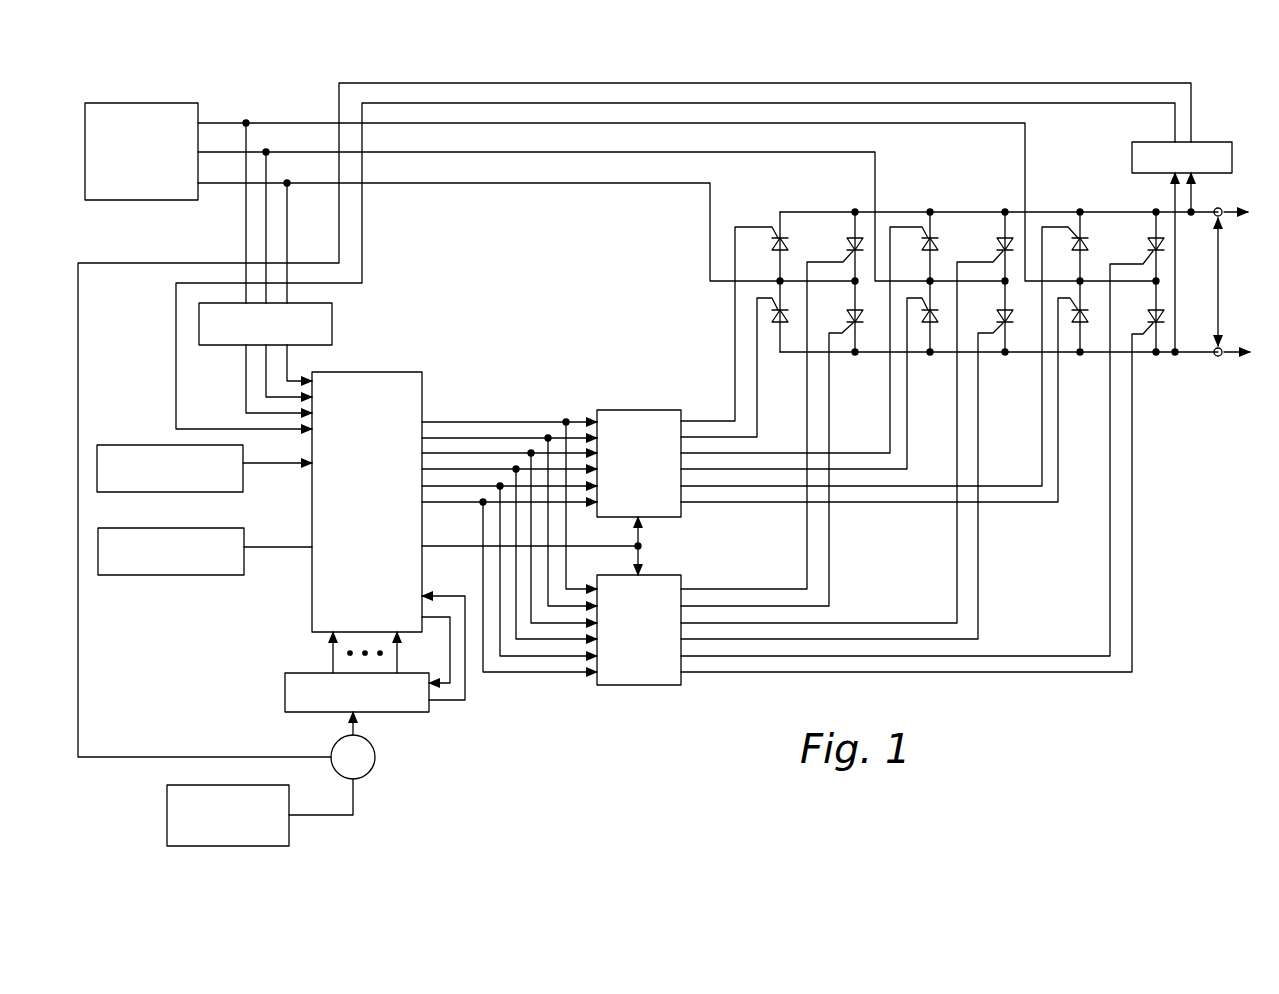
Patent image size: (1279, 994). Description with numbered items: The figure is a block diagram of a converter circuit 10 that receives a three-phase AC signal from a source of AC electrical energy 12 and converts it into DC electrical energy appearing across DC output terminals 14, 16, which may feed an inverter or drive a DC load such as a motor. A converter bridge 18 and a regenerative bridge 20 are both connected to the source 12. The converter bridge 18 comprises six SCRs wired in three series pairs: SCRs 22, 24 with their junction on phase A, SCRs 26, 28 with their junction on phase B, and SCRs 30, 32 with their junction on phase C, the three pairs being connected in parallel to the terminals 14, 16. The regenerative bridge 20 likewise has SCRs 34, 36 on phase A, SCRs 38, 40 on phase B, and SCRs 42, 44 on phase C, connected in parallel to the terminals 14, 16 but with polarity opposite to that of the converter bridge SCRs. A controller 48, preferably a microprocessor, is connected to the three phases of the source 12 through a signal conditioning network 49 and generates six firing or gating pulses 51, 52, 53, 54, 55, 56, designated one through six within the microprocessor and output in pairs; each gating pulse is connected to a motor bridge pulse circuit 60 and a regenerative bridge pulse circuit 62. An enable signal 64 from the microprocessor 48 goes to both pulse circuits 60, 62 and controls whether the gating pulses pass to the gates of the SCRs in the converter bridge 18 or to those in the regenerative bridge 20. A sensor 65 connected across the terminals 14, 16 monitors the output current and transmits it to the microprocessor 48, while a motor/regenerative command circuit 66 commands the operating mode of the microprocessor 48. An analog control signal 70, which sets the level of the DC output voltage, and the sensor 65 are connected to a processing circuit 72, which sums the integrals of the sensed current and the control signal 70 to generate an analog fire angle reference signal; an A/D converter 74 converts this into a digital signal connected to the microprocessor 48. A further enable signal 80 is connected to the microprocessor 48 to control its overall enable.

The converter circuit 10 is at (1114, 680).
The source of AC electrical energy 12 is at (187, 103).
The DC output terminal 14 is at (1223, 207).
The DC output terminal 16 is at (1223, 347).
The converter bridge 18 is at (770, 192).
The regenerative bridge 20 is at (856, 204).
The SCR 22 is at (778, 246).
The SCR 24 is at (772, 298).
The SCR 26 is at (927, 253).
The SCR 28 is at (926, 298).
The SCR 30 is at (1077, 250).
The SCR 32 is at (1080, 300).
The SCR 34 is at (850, 240).
The SCR 36 is at (852, 317).
The SCR 38 is at (1002, 240).
The SCR 40 is at (1004, 317).
The SCR 42 is at (1149, 246).
The SCR 44 is at (1153, 317).
The controller 48 is at (367, 372).
The signal conditioning network 49 is at (326, 304).
The gating pulse 51 is at (442, 415).
The gating pulse 52 is at (456, 438).
The gating pulse 53 is at (473, 453).
The gating pulse 54 is at (488, 469).
The gating pulse 55 is at (504, 486).
The gating pulse 56 is at (558, 503).
The motor bridge pulse circuit 60 is at (649, 410).
The regenerative bridge pulse circuit 62 is at (660, 575).
The enable signal 64 is at (459, 546).
The sensor 65 is at (1152, 142).
The motor/regenerative command circuit 66 is at (140, 445).
The analog control signal 70 is at (192, 785).
The processing circuit 72 is at (375, 757).
The A/D converter 74 is at (292, 673).
The enable signal 80 is at (141, 528).